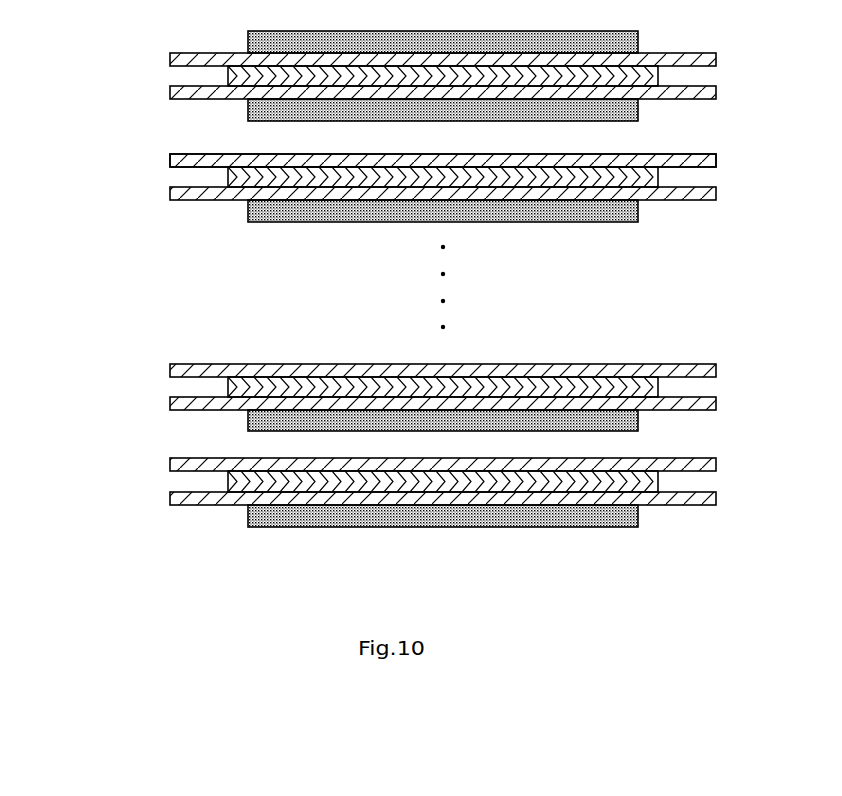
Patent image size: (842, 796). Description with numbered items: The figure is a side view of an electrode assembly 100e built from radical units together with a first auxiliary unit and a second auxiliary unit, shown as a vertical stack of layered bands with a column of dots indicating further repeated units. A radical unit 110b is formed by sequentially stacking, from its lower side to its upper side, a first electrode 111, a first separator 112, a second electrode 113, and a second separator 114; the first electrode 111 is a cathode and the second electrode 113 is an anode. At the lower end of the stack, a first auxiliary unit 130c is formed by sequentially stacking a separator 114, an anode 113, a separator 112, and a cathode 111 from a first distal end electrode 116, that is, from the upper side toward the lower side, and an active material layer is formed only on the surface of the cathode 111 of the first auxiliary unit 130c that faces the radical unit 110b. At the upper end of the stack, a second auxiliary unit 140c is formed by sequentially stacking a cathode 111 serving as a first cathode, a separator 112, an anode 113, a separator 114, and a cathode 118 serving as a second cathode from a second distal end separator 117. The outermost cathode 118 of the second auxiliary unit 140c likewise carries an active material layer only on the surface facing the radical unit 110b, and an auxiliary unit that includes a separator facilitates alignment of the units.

The electrode assembly 100e is at (398, 272).
The second auxiliary unit 140c is at (375, 272).
The radical unit 110b is at (70, 145).
The first auxiliary unit 130c is at (98, 448).
The cathode (second cathode) 118 is at (248, 42).
The second distal end separator 117 is at (409, 152).
The first distal end electrode 116 is at (250, 421).
The second separator 114 is at (178, 59).
The second electrode (anode) 113 is at (233, 77).
The first separator 112 is at (178, 93).
The first electrode (cathode) 111 is at (250, 108).